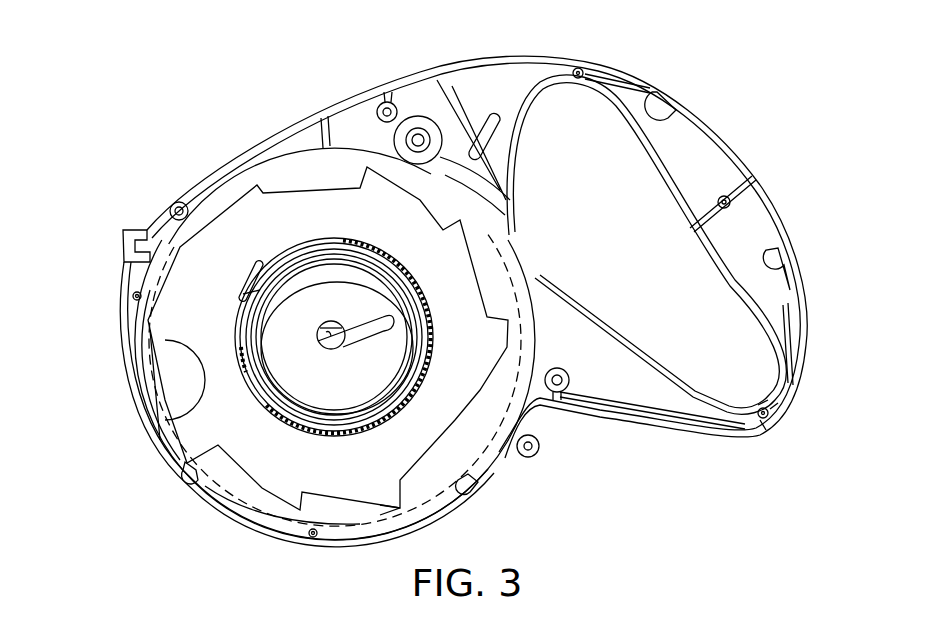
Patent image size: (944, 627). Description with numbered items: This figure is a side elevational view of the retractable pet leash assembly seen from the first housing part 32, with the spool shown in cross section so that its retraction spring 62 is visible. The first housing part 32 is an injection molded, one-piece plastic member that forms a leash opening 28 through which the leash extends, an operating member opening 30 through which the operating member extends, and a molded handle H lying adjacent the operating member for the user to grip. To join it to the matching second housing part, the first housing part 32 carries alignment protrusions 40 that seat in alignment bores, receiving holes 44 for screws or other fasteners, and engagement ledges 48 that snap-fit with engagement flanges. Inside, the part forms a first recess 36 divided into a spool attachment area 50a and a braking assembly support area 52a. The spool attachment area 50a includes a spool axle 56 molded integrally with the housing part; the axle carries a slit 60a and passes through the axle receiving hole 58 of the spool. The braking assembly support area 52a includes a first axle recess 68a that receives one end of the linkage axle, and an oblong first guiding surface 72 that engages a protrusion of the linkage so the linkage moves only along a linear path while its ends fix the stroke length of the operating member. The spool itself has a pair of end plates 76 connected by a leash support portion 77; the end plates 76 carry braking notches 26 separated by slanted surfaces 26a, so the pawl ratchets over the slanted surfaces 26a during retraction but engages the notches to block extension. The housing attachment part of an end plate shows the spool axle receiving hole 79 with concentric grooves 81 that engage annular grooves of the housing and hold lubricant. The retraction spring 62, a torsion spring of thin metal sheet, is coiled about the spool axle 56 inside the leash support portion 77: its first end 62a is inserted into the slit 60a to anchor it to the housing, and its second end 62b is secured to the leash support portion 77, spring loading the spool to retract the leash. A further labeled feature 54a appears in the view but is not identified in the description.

The first housing part 32 is at (662, 27).
The operating member opening 30 is at (514, 56).
The braking notches 26 is at (214, 462).
The slanted surface 26a is at (262, 490).
The leash opening 28 is at (123, 243).
The first recess 36 is at (177, 268).
The alignment protrusions 40 is at (578, 79).
The receiving holes 44 is at (378, 110).
The engagement ledges 48 is at (657, 90).
The braking assembly support area 52a is at (415, 103).
The first guiding surface 72 is at (498, 128).
The first axle recess 68a is at (497, 185).
The handle H is at (718, 115).
The leash support portion 77 is at (357, 440).
The spool axle receiving hole 79 is at (382, 353).
The slit 60a is at (336, 350).
The axle receiving hole 58 is at (341, 328).
The spool axle 56 is at (328, 322).
The retraction spring 62 is at (248, 375).
The first end 62a is at (326, 332).
The second end 62b is at (246, 283).
The grooves 81 is at (258, 293).
The spool attachment area 50a is at (318, 352).
The brake member 54a is at (170, 393).
The end plates 76 is at (403, 447).